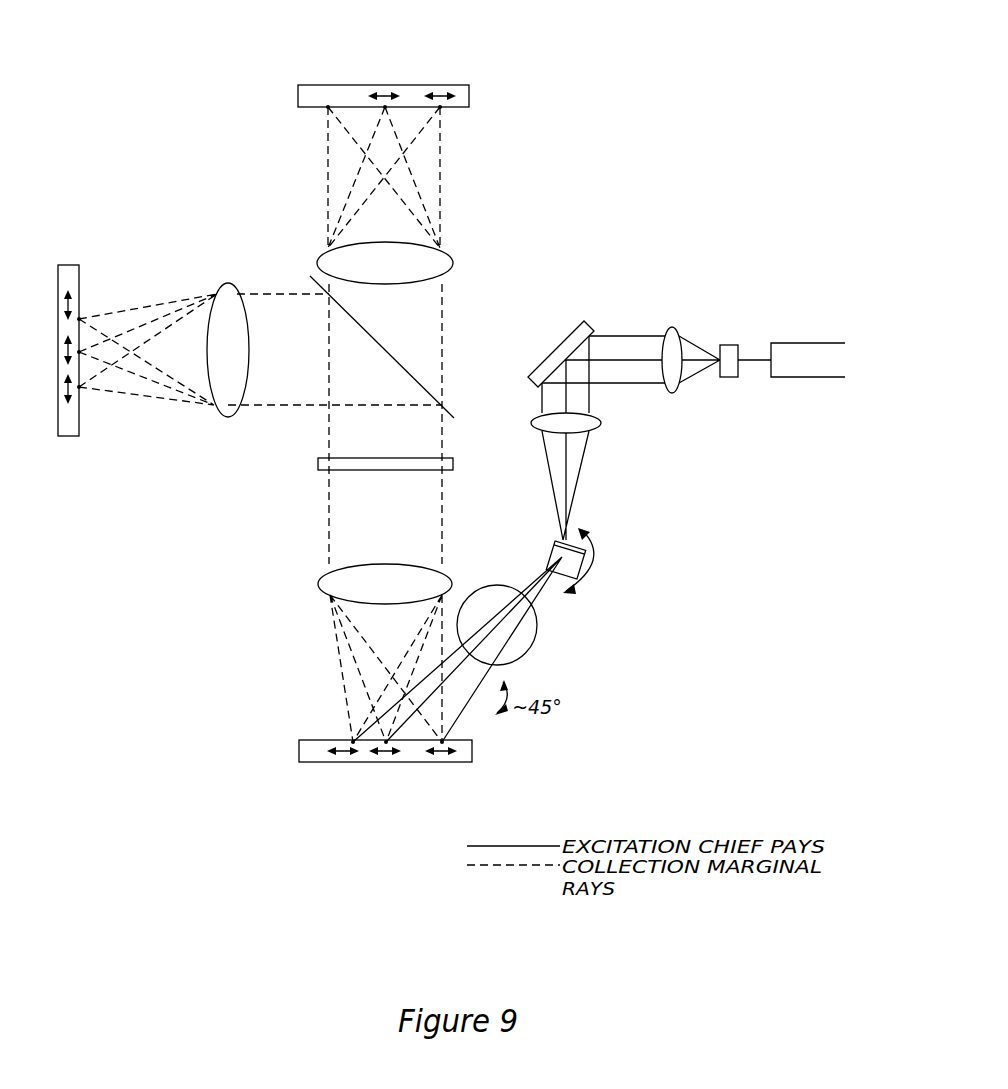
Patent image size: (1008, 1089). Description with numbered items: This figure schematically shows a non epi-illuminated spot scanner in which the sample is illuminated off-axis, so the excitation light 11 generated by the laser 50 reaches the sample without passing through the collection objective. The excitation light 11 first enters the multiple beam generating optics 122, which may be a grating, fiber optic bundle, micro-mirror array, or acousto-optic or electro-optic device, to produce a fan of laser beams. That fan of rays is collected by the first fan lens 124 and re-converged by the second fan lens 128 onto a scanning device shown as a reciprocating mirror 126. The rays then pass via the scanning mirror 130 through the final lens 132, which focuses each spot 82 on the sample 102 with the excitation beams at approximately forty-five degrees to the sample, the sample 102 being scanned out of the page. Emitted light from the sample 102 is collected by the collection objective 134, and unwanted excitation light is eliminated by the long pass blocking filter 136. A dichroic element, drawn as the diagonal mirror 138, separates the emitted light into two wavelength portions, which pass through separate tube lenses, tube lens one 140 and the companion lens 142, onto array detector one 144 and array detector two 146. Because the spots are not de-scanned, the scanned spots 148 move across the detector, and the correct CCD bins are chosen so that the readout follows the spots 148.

The excitation light 11 is at (752, 357).
The laser 50 is at (783, 372).
The spot 82 is at (466, 727).
The sample 102 is at (433, 762).
The multiple beam generating optics 122 is at (728, 375).
The first fan lens 124 is at (668, 332).
The reciprocating mirror 126 is at (538, 367).
The second fan lens 128 is at (592, 425).
The scanning mirror 130 is at (593, 547).
The final lens 132 is at (537, 637).
The collection objective 134 is at (322, 585).
The long pass blocking filter 136 is at (318, 463).
The dichroic mirror 138 is at (452, 410).
The tube lens 1 140 is at (418, 247).
The lens 142 is at (233, 288).
The array detector 1 144 is at (467, 87).
The array detector 2 146 is at (80, 302).
The spots 148 is at (324, 102).